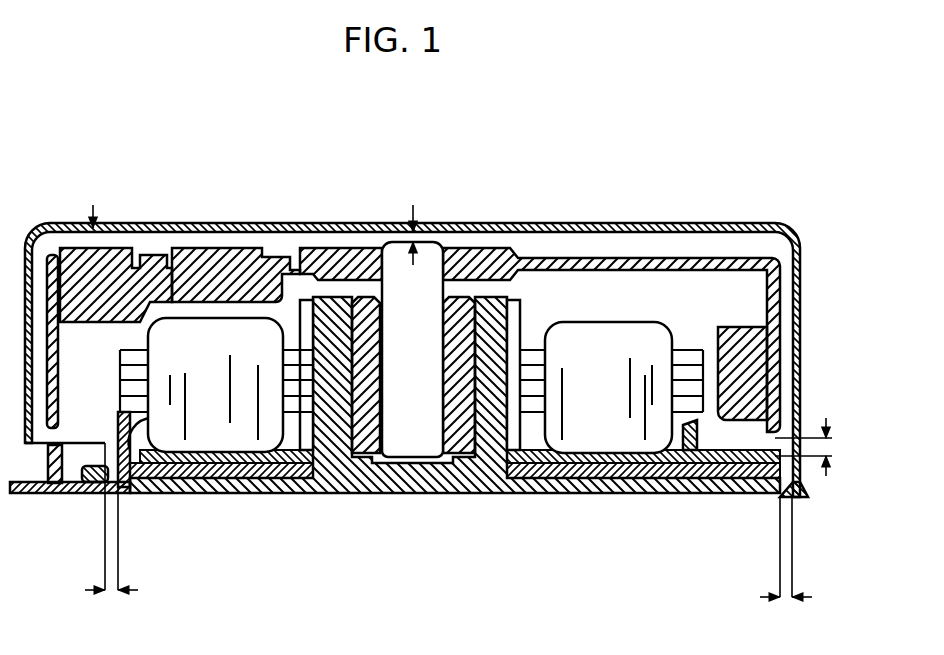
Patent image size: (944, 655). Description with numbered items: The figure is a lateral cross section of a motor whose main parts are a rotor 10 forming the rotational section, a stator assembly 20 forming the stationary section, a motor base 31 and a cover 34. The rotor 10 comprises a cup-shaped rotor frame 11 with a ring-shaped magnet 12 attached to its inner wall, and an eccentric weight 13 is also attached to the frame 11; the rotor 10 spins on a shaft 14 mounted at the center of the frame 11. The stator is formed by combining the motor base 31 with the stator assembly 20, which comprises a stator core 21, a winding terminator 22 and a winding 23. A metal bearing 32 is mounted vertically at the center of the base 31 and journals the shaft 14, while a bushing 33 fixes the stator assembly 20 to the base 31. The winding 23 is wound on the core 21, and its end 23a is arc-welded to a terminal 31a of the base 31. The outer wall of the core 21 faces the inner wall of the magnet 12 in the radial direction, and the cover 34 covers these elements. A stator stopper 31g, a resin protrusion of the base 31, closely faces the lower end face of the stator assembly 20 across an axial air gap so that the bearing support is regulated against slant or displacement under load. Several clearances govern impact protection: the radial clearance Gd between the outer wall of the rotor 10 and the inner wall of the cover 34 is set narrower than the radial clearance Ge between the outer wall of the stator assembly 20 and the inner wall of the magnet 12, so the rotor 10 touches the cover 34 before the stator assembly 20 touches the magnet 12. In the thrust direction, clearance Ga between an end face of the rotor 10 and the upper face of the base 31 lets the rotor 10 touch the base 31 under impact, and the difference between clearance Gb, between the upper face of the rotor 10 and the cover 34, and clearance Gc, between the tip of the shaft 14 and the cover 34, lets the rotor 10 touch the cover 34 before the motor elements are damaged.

The rotor 10 is at (569, 262).
The rotor frame 11 is at (508, 257).
The magnet 12 is at (748, 355).
The eccentric weight 13 is at (93, 262).
The shaft 14 is at (426, 270).
The stator assembly 20 is at (614, 350).
The stator core 21 is at (525, 405).
The winding terminator 22 is at (160, 486).
The winding 23 is at (247, 437).
The end of winding 23a is at (110, 484).
The motor base 31 is at (383, 480).
The terminal 31a is at (47, 496).
The stator stopper 31g is at (688, 468).
The bearing 32 is at (363, 312).
The bushing 33 is at (306, 312).
The cover 34 is at (207, 248).
The clearance Ga is at (828, 447).
The clearance Gb is at (80, 224).
The clearance Gc is at (407, 229).
The clearance Gd is at (786, 568).
The clearance Ge is at (111, 537).